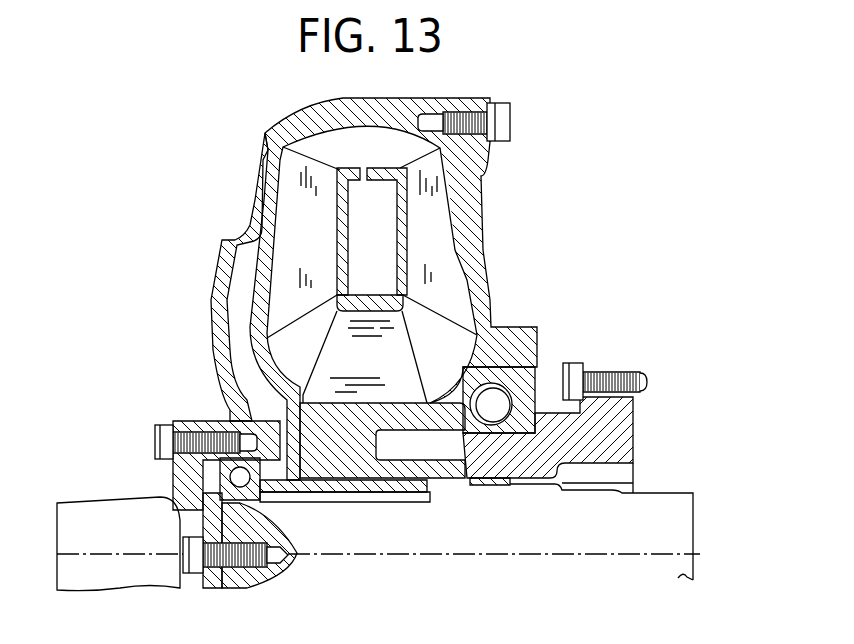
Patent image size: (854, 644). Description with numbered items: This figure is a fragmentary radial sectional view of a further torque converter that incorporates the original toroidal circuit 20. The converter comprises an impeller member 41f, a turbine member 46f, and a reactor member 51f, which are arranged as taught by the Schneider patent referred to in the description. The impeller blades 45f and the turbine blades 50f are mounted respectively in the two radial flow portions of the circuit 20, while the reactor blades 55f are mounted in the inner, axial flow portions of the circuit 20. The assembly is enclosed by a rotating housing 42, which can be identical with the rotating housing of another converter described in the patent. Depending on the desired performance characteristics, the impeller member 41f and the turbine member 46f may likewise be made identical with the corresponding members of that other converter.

The rotating housing 42 is at (347, 99).
The toroidal circuit 20 is at (392, 155).
The turbine blades 50f is at (328, 230).
The impeller blades 45f is at (448, 251).
The impeller member 41f is at (484, 211).
The turbine member 46f is at (256, 262).
The reactor blades 55f is at (375, 369).
The reactor member 51f is at (418, 372).